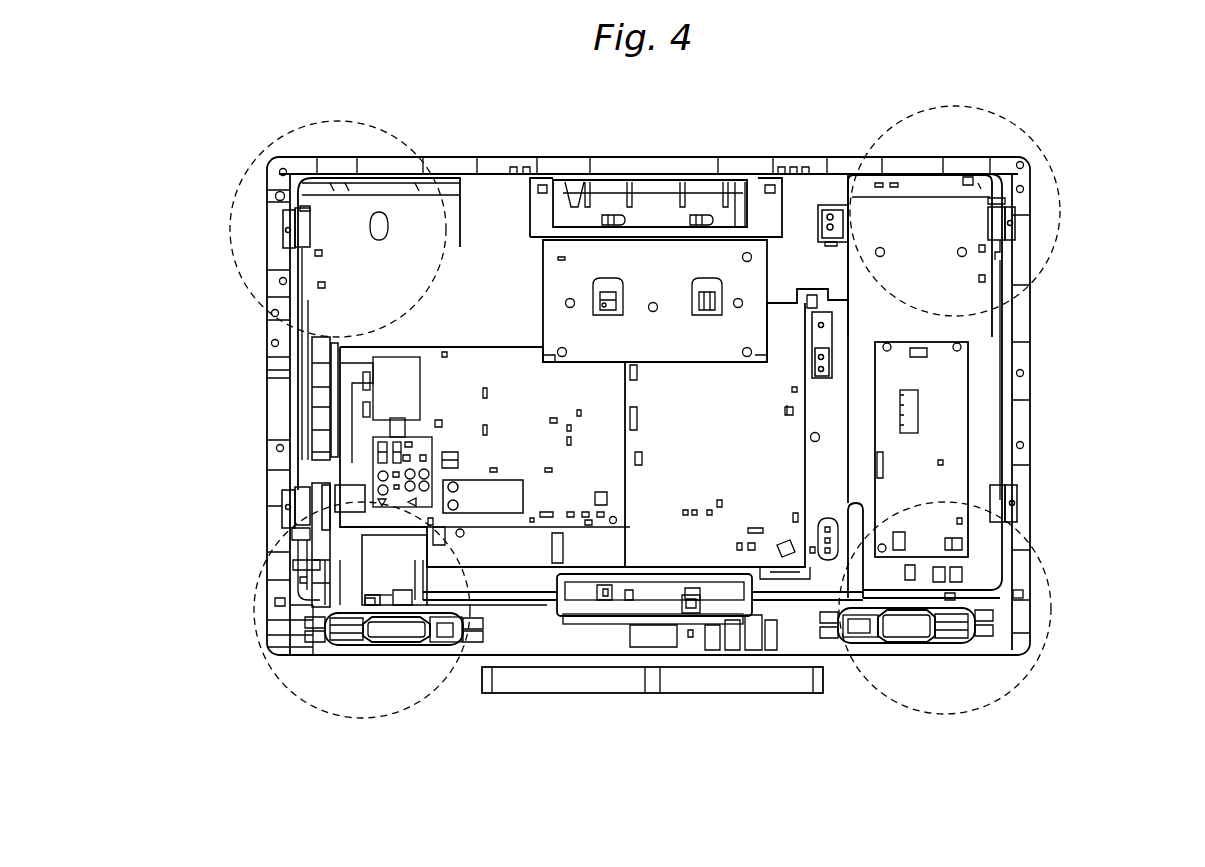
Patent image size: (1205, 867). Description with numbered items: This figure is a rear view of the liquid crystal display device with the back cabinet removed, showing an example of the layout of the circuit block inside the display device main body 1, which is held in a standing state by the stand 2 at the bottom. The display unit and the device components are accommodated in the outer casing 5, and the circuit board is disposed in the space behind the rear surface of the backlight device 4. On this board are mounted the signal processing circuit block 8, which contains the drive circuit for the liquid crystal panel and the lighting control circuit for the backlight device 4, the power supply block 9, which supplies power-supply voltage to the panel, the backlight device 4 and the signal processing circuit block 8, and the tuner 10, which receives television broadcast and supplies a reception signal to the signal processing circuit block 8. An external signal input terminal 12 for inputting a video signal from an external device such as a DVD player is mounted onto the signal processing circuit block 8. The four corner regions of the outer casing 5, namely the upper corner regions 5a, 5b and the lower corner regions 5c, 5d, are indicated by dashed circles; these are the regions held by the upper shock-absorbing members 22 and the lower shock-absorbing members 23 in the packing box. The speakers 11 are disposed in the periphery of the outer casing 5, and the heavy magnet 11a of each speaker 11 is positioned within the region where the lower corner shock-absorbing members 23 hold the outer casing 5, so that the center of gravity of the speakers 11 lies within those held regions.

The display device main body 1 is at (335, 157).
The stand 2 is at (760, 683).
The backlight device 4 is at (912, 203).
The outer casing 5 is at (457, 155).
The upper corner region 5a is at (248, 175).
The upper corner region 5b is at (1048, 163).
The lower corner region 5c is at (255, 623).
The lower corner region 5d is at (1050, 623).
The shock-absorbing member 22 is at (642, 221).
The shock-absorbing member 23 is at (652, 610).
The signal processing circuit block 8 is at (503, 365).
The power supply block 9 is at (787, 317).
The tuner 10 is at (492, 503).
The speaker 11 is at (353, 643).
The magnet 11a is at (400, 635).
The external signal input terminal 12 is at (282, 488).